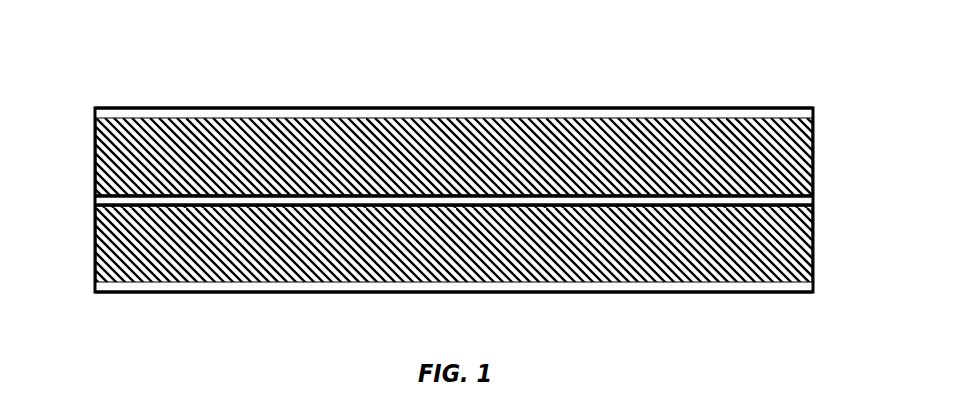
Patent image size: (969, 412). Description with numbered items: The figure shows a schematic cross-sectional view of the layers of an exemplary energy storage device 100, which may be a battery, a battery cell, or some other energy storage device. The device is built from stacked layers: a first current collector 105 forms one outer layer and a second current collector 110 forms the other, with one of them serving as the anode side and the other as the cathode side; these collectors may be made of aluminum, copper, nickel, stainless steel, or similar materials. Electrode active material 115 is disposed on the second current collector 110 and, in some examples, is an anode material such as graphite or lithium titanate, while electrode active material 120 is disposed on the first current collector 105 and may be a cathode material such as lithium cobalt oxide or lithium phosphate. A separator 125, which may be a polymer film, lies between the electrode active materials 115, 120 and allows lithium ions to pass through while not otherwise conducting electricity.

The energy storage device 100 is at (111, 84).
The first current collector 105 is at (260, 293).
The second current collector 110 is at (668, 107).
The electrode active material 115 is at (813, 152).
The electrode active material 120 is at (813, 250).
The separator 125 is at (95, 200).